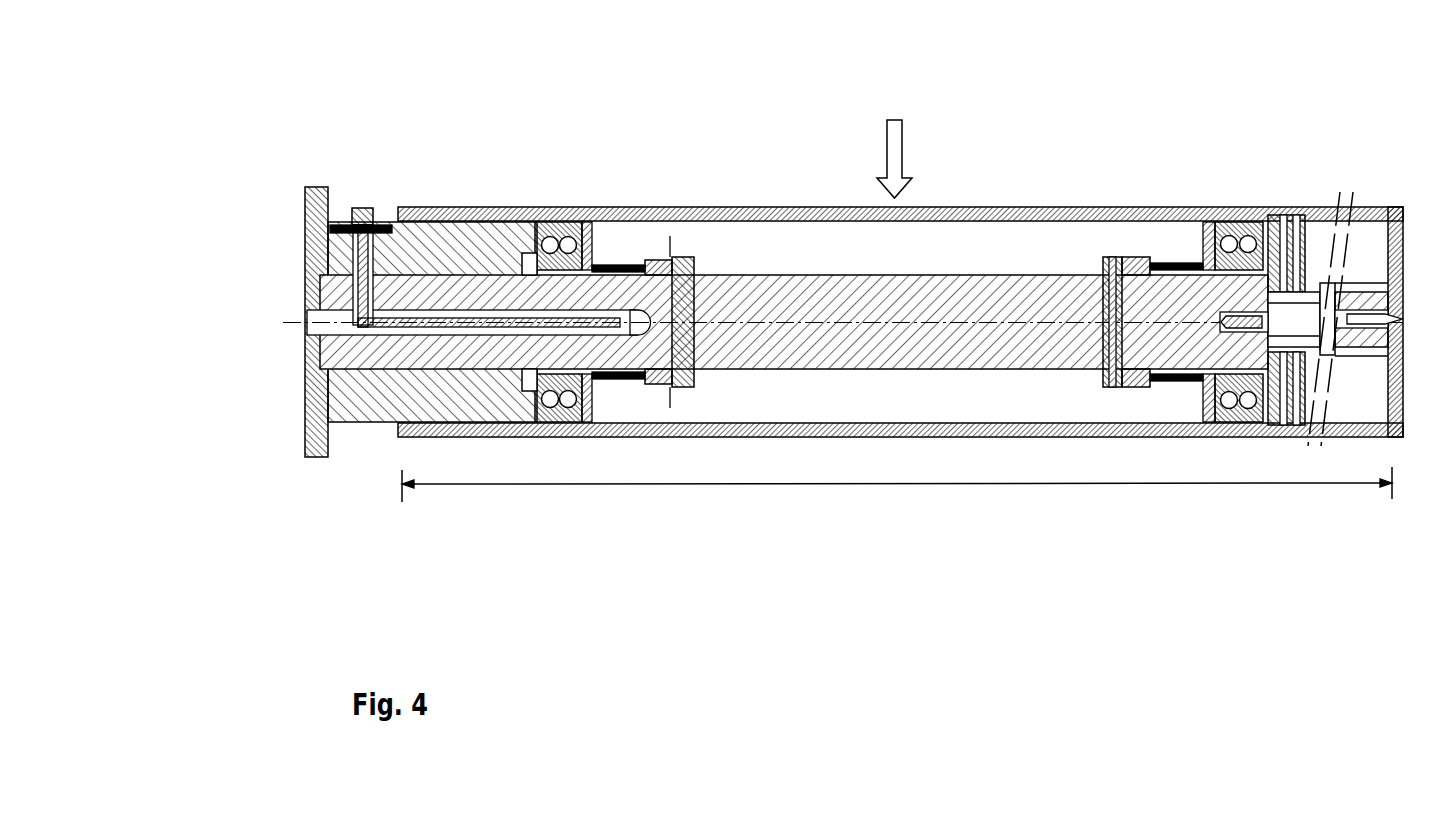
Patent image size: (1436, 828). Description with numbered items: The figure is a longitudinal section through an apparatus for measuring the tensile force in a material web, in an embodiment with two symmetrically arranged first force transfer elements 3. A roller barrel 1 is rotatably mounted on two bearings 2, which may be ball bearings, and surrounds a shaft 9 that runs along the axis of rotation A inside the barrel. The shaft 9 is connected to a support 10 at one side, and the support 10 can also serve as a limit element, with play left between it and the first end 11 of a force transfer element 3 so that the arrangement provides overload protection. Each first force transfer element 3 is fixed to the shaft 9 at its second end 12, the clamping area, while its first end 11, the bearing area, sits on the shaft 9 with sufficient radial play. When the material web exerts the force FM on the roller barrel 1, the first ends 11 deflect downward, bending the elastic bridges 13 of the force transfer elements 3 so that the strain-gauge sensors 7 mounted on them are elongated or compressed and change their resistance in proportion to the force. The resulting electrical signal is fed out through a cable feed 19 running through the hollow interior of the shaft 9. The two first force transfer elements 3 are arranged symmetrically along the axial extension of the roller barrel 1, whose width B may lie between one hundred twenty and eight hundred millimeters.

The roller barrel 1 is at (970, 212).
The bearings 2 is at (562, 237).
The first force transfer element 3 is at (533, 227).
The sensor 7 is at (616, 265).
The shaft 9 is at (1022, 295).
The support 10 is at (318, 187).
The first end 11 is at (525, 255).
The second end 12 is at (673, 258).
The bridge 13 is at (636, 264).
The cable feed 19 is at (360, 267).
The axis of rotation A is at (313, 323).
The width B is at (897, 496).
The force FM is at (894, 136).